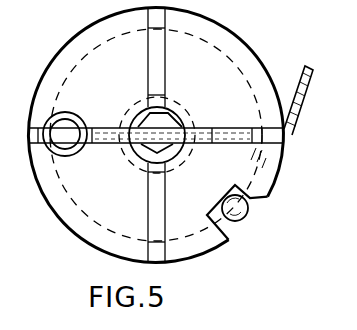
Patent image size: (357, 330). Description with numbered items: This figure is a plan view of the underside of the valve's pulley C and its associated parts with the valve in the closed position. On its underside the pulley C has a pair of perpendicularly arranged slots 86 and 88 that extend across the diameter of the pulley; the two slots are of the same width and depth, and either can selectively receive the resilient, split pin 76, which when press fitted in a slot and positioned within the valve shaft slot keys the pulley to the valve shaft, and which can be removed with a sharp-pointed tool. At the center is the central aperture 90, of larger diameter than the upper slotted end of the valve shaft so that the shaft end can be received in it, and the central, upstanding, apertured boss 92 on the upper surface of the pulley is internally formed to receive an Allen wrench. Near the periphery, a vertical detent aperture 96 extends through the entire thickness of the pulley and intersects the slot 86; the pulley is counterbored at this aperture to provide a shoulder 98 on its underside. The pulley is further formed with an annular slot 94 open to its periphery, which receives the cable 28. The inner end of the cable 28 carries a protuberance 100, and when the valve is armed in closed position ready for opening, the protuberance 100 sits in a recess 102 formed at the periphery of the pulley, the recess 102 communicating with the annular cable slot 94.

The pulley C is at (254, 41).
The annular slot 94 is at (209, 39).
The cable 28 is at (302, 97).
The central aperture 90 is at (158, 122).
The resilient split pin 76 is at (212, 132).
The shoulder 98 is at (70, 118).
The detent aperture 96 is at (66, 146).
The slot 86 is at (256, 144).
The apertured boss 92 is at (186, 157).
The slot 88 is at (166, 205).
The protuberance 100 is at (249, 216).
The recess 102 is at (222, 232).